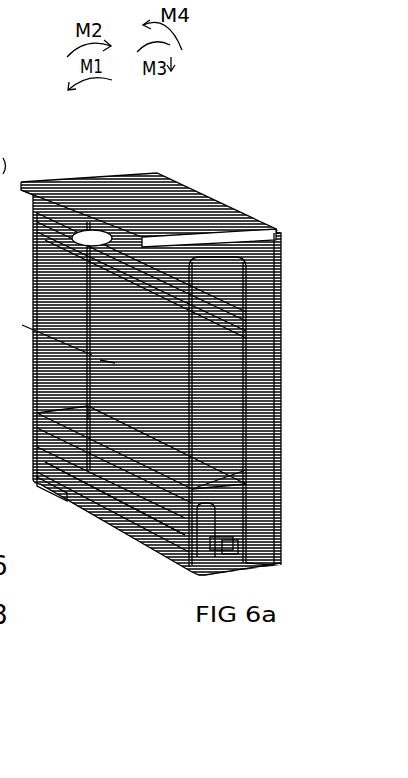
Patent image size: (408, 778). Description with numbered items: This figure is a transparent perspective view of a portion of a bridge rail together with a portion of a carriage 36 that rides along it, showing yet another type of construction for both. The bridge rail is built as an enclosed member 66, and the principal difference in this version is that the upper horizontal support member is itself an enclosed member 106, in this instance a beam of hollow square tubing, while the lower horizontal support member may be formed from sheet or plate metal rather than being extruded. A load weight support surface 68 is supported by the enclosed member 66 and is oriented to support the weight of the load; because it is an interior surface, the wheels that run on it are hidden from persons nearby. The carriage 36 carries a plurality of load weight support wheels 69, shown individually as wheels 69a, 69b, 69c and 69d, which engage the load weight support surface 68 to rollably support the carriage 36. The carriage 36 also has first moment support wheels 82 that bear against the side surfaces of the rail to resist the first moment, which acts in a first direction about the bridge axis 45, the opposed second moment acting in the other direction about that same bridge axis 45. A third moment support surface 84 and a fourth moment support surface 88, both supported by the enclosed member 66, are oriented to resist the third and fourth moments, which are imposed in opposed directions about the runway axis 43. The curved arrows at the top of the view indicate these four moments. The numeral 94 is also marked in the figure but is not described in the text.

The first moment support wheels 82 is at (85, 232).
The enclosed member 106 is at (240, 310).
The runway axis 43 is at (10, 368).
The bridge axis 45 is at (140, 372).
The load weight support wheel 69d is at (204, 424).
The enclosed member 66 is at (250, 462).
The load weight support wheels 69 is at (115, 578).
The load weight support wheel 69b is at (204, 518).
The lower rail 94 is at (288, 548).
The carriage 36 is at (281, 568).
The load weight support surface 68 is at (218, 555).
The third moment support surface 84 is at (232, 567).
The fourth moment support surface 88 is at (292, 583).
The load weight support wheel 69c is at (67, 487).
The load weight support wheel 69a is at (158, 535).